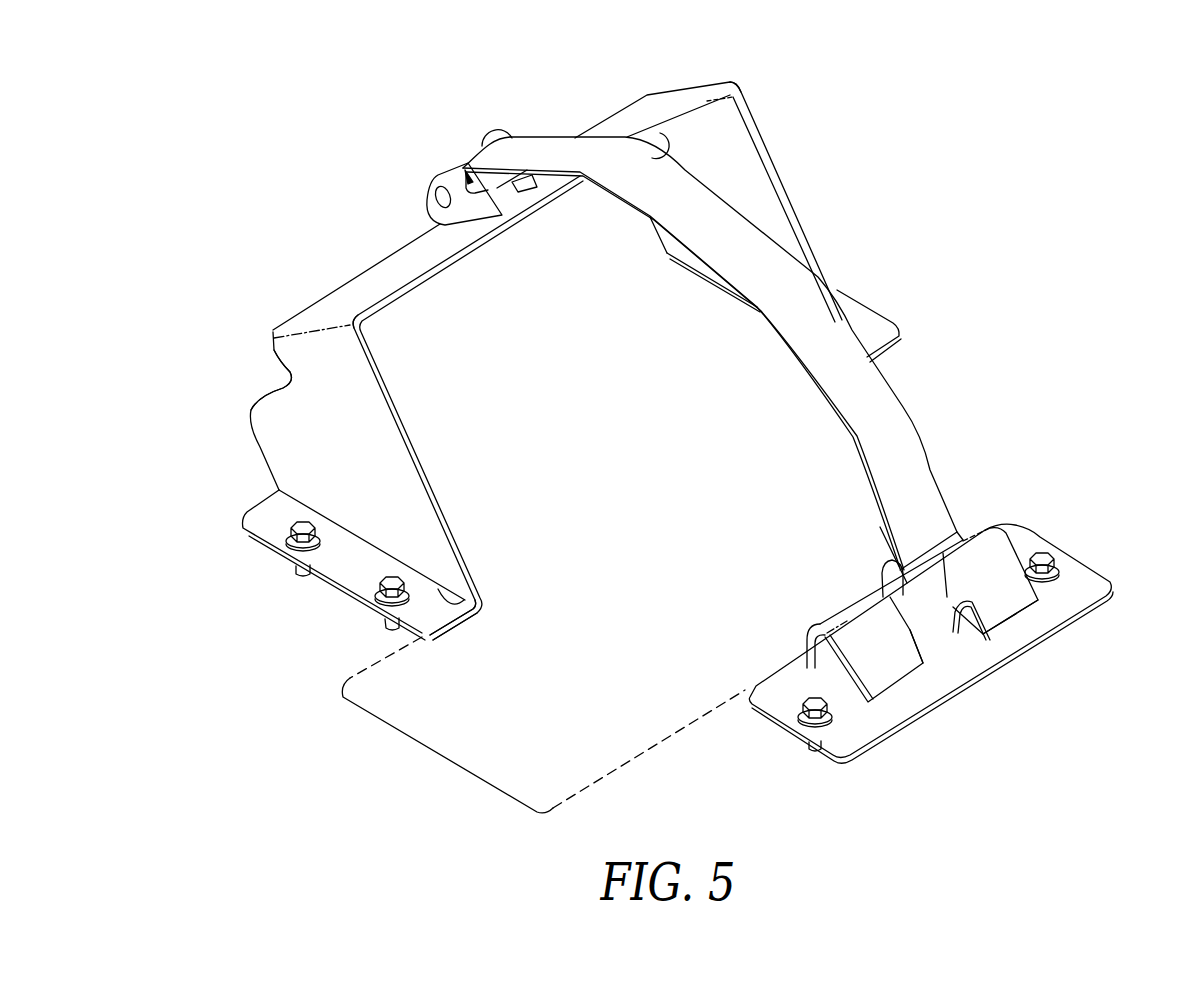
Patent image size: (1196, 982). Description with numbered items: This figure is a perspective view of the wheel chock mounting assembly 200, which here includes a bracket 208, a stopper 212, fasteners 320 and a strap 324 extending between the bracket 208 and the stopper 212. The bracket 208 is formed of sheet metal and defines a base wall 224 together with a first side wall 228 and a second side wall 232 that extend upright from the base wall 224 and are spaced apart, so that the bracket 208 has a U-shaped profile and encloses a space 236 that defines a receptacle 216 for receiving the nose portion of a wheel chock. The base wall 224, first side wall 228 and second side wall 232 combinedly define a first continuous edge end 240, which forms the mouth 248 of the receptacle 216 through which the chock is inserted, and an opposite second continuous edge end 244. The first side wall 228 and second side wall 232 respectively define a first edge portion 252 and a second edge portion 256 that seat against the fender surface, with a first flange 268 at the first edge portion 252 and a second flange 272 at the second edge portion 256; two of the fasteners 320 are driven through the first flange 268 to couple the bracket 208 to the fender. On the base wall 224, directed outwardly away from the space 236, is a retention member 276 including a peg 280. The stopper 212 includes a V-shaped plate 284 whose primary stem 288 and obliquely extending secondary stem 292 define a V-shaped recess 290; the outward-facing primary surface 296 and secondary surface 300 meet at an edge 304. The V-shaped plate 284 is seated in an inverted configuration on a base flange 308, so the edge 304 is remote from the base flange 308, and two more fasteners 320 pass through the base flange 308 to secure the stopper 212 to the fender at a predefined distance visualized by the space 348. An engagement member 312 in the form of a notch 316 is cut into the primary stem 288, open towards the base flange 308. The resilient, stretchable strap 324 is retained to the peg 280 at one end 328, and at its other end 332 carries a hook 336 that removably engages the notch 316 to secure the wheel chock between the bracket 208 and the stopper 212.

The wheel chock mounting assembly 200 is at (221, 170).
The bracket 208 is at (669, 86).
The stopper 212 is at (1034, 525).
The receptacle 216 is at (562, 468).
The base wall 224 is at (367, 282).
The first side wall 228 is at (280, 440).
The second side wall 232 is at (760, 120).
The space 236 is at (488, 332).
The first continuous edge end 240 is at (383, 367).
The second continuous edge end 244 is at (272, 373).
The mouth 248 is at (588, 430).
The first edge portion 252 is at (475, 610).
The second edge portion 256 is at (698, 272).
The first flange 268 is at (427, 642).
The second flange 272 is at (874, 310).
The retention member 276 is at (460, 168).
The peg 280 is at (467, 170).
The V-shaped plate 284 is at (833, 617).
The primary stem 288 is at (997, 602).
The V-shaped recess 290 is at (832, 664).
The secondary stem 292 is at (805, 655).
The primary surface 296 is at (873, 675).
The secondary surface 300 is at (815, 622).
The edge 304 is at (867, 613).
The base flange 308 is at (1107, 572).
The engagement member 312 is at (930, 660).
The notch 316 is at (947, 647).
The fasteners 320 is at (1053, 552).
The strap 324 is at (722, 197).
The end 328 is at (477, 150).
The other end 332 is at (947, 497).
The hook 336 is at (1010, 645).
The space 348 is at (432, 755).